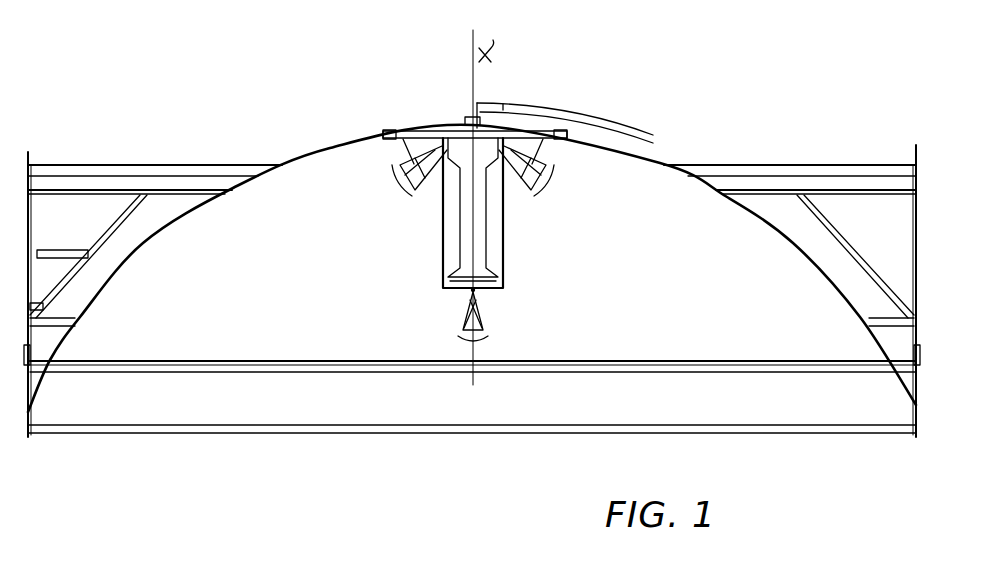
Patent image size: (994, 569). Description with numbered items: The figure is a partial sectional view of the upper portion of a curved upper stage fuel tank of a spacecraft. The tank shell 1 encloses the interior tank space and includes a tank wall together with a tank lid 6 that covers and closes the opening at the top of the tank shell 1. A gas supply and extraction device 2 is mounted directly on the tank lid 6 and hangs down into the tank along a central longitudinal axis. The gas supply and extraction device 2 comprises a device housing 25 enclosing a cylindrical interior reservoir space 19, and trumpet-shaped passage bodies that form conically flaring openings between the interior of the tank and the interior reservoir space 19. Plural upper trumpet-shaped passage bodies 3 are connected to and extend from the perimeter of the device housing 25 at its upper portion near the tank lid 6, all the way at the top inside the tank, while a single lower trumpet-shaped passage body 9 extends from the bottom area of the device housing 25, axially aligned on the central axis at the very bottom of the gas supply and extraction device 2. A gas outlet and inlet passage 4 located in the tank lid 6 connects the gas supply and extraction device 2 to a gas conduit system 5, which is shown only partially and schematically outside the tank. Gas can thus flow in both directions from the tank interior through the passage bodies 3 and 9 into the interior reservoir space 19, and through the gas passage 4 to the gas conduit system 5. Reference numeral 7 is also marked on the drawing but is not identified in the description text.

The tank shell 1 is at (245, 180).
The gas supply and extraction device 2 is at (495, 210).
The upper trumpet-shaped passage bodies 3 is at (400, 128).
The gas outlet and inlet passage 4 is at (465, 118).
The gas conduit system 5 is at (503, 110).
The tank lid 6 is at (385, 133).
The tank wall structure 7 is at (775, 362).
The lower trumpet-shaped passage body 9 is at (480, 313).
The interior reservoir space 19 is at (452, 232).
The device housing 25 is at (568, 137).